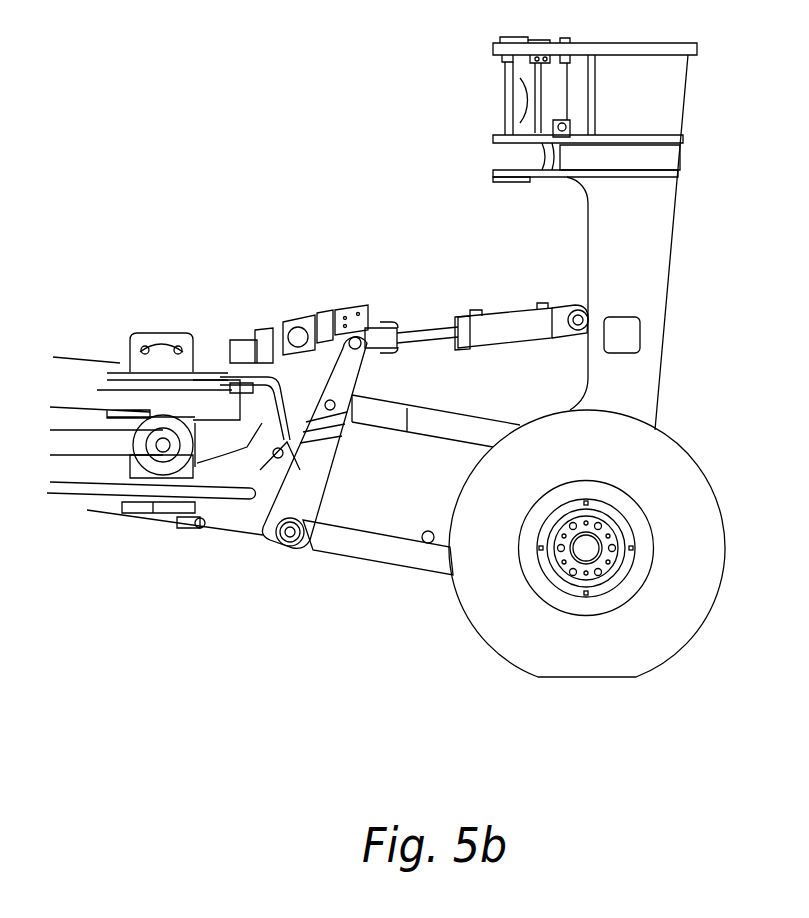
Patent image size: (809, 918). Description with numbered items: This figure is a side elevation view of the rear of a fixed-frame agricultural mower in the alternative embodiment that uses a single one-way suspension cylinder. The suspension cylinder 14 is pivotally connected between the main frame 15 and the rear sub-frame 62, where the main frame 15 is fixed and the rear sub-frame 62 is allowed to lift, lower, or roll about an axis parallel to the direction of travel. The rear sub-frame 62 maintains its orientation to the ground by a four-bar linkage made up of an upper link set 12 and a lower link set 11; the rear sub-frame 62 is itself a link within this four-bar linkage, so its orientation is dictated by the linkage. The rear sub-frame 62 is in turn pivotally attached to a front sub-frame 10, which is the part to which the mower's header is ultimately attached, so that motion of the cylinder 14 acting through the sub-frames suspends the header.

The front sub-frame 10 is at (262, 425).
The lower link set 11 is at (392, 550).
The upper link set 12 is at (448, 425).
The suspension cylinder 14 is at (530, 308).
The main frame 15 is at (655, 207).
The rear sub-frame 62 is at (308, 478).